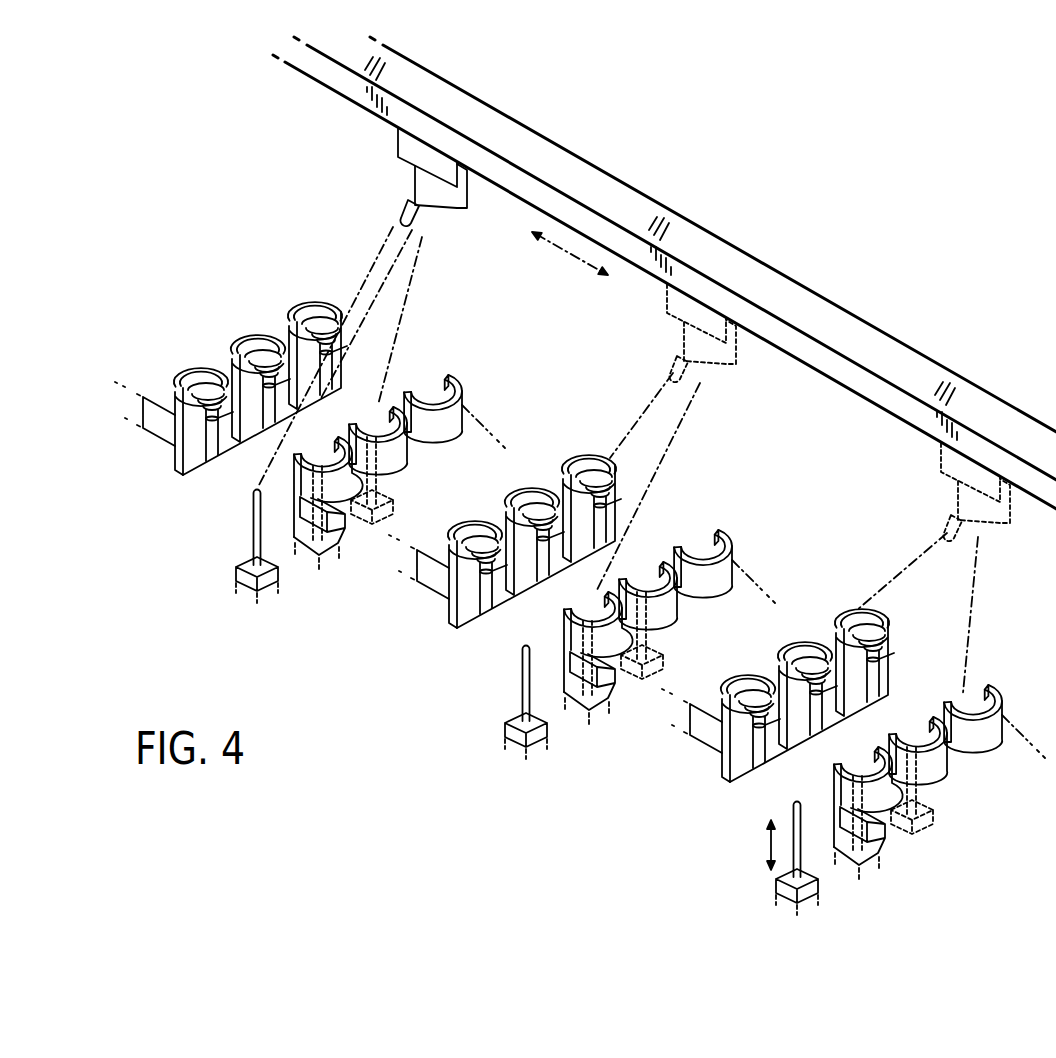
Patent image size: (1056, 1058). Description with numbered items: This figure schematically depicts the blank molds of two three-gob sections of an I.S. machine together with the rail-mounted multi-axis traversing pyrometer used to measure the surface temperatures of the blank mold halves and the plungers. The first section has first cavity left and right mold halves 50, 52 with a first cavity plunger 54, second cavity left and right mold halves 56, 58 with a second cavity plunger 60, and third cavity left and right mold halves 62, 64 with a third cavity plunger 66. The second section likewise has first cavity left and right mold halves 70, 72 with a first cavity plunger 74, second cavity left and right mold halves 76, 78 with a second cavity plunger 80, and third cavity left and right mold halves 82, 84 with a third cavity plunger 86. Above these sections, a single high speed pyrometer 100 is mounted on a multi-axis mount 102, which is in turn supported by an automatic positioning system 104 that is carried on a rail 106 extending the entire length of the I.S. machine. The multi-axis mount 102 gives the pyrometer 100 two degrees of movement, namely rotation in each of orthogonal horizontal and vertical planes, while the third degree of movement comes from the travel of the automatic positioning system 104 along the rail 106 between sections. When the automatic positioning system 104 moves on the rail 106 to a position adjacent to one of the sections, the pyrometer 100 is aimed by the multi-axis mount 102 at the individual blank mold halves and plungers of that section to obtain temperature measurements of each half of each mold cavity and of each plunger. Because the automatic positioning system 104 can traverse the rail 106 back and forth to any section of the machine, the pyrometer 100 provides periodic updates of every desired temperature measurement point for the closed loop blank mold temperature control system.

The first cavity left mold half 50 is at (231, 358).
The first cavity right mold half 52 is at (403, 489).
The first cavity plunger 54 is at (372, 542).
The second cavity left mold half 56 is at (242, 359).
The second cavity right mold half 58 is at (412, 441).
The second cavity plunger 60 is at (321, 571).
The third cavity left mold half 62 is at (186, 393).
The third cavity right mold half 64 is at (303, 595).
The third cavity plunger 66 is at (252, 527).
The first cavity left mold half 70 is at (505, 506).
The first cavity right mold half 72 is at (642, 649).
The first cavity plunger 74 is at (692, 635).
The second cavity left mold half 76 is at (534, 494).
The second cavity right mold half 78 is at (692, 598).
The second cavity plunger 80 is at (589, 726).
The third cavity left mold half 82 is at (462, 551).
The third cavity right mold half 84 is at (549, 644).
The third cavity plunger 86 is at (522, 690).
The pyrometer 100 is at (416, 200).
The multi-axis mount 102 is at (452, 203).
The automatic positioning system 104 is at (398, 140).
The rail 106 is at (638, 193).